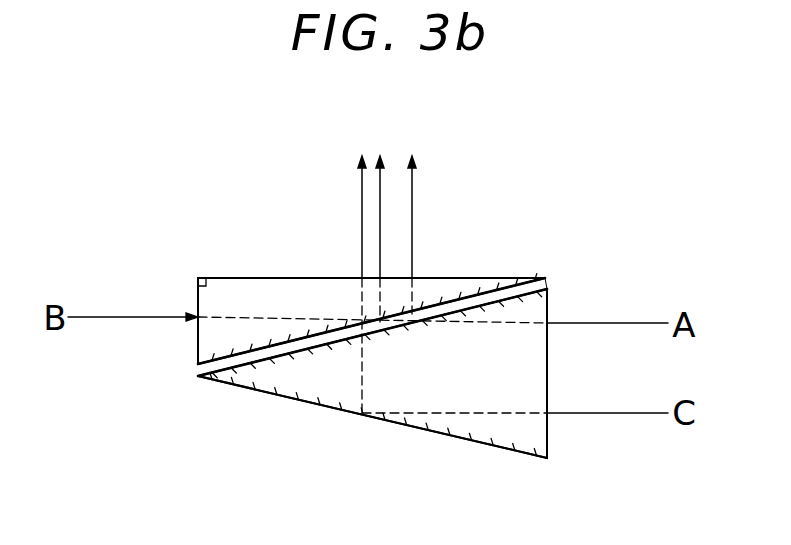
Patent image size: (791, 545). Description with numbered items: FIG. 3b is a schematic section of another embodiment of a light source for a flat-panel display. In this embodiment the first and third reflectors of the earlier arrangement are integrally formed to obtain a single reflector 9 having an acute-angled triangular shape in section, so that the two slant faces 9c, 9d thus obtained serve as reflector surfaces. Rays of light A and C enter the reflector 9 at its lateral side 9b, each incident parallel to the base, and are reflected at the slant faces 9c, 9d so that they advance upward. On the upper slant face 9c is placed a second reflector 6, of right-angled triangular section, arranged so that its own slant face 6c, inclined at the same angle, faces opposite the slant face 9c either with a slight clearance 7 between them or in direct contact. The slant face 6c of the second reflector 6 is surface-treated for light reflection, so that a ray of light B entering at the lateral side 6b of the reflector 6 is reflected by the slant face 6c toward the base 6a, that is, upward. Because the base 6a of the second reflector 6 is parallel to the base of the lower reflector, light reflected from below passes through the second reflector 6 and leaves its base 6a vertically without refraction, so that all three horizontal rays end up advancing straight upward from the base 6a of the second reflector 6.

The second reflector 6 is at (240, 298).
The base of the second reflector 6a is at (480, 278).
The lateral side of the second reflector 6b is at (200, 354).
The slant face of the second reflector 6c is at (302, 338).
The slight clearance 7 is at (550, 283).
The reflector 9 is at (418, 398).
The lateral side of the reflector 9b is at (549, 366).
The slant face of the reflector 9c is at (287, 360).
The slant face of the reflector 9d is at (503, 445).